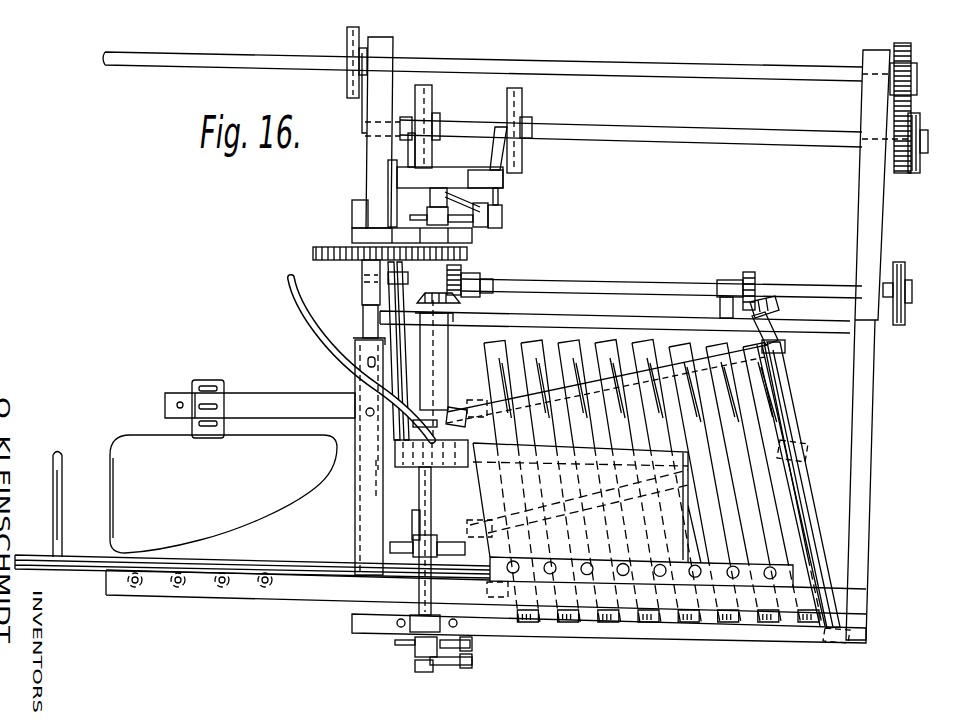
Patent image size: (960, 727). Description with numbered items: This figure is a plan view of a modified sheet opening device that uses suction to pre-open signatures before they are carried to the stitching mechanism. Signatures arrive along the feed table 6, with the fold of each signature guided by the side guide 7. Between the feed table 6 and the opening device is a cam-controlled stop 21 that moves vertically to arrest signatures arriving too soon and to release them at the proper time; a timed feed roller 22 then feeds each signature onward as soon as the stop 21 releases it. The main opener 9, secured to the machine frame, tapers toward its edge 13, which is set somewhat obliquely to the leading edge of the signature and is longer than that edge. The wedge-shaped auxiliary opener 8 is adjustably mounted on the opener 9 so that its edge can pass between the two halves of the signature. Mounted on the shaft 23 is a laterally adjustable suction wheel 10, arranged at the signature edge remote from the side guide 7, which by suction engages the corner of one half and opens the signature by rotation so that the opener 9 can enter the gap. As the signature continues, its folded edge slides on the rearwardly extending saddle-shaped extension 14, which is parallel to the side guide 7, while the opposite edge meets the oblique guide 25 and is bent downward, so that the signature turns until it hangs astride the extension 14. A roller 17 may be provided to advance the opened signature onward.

The feed table 6 is at (767, 417).
The side guide 7 is at (298, 587).
The auxiliary opener 8 is at (397, 427).
The main opener 9 is at (363, 507).
The suction wheel 10 is at (460, 410).
The edge 13 is at (380, 497).
The saddle-shaped extension 14 is at (200, 563).
The roller 17 is at (66, 558).
The stop 21 is at (415, 530).
The timed feed roller 22 is at (453, 547).
The shaft 23 is at (428, 507).
The oblique guide 25 is at (258, 510).